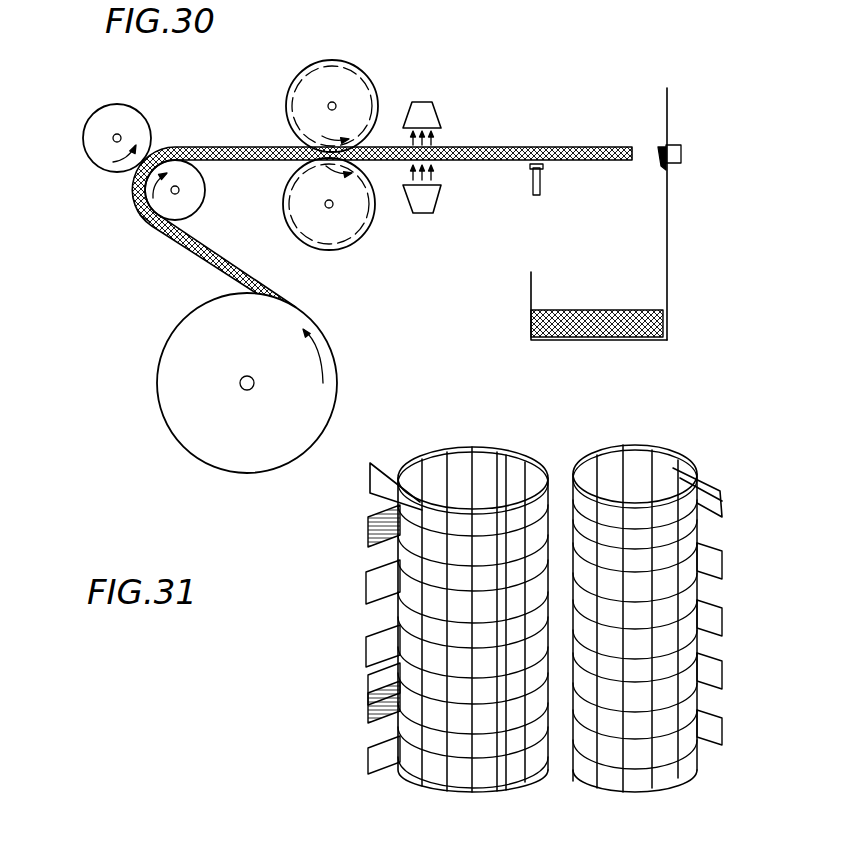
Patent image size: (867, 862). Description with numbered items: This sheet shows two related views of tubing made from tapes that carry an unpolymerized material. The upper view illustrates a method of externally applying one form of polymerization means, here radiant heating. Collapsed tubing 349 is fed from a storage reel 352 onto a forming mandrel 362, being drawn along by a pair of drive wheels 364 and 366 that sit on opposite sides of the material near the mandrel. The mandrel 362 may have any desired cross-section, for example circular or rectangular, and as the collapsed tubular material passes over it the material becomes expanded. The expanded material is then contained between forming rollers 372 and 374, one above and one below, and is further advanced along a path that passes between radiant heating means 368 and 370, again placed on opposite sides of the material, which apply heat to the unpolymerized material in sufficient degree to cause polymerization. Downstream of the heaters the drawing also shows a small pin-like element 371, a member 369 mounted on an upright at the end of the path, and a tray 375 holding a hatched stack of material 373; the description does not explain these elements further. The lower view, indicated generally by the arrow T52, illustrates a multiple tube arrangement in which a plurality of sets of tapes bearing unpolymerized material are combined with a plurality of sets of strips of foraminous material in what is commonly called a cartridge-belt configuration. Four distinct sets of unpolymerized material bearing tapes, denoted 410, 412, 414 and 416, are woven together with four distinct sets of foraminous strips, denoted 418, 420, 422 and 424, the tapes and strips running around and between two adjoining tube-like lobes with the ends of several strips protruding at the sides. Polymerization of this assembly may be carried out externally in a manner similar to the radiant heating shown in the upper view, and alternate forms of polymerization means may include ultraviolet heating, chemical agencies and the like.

In FIG. 30, the collapsed tubing 349 is at (210, 267).
In FIG. 30, the storage reel 352 is at (187, 332).
In FIG. 30, the forming mandrel 362 is at (140, 217).
In FIG. 30, the drive wheel 364 is at (100, 118).
In FIG. 30, the drive wheel 366 is at (188, 212).
In FIG. 30, the radiant heating means 368 is at (436, 110).
In FIG. 30, the cutter 369 is at (678, 146).
In FIG. 30, the radiant heating means 370 is at (437, 205).
In FIG. 30, the pin 371 is at (541, 180).
In FIG. 30, the forming roller 372 is at (330, 72).
In FIG. 30, the web stack 373 is at (605, 308).
In FIG. 30, the forming roller 374 is at (355, 228).
In FIG. 30, the tray 375 is at (530, 287).
In FIG. 31, the set of unpolymerized material bearing tapes 410 is at (373, 480).
In FIG. 31, the set of unpolymerized material bearing tapes 412 is at (370, 532).
In FIG. 31, the set of unpolymerized material bearing tapes 414 is at (437, 463).
In FIG. 31, the set of unpolymerized material bearing tapes 416 is at (412, 762).
In FIG. 31, the set of foraminous strips 418 is at (483, 457).
In FIG. 31, the set of foraminous strips 420 is at (583, 458).
In FIG. 31, the set of foraminous strips 422 is at (367, 588).
In FIG. 31, the set of foraminous strips 424 is at (385, 610).
In FIG. 31, the multiple tube arrangement T52 is at (693, 462).